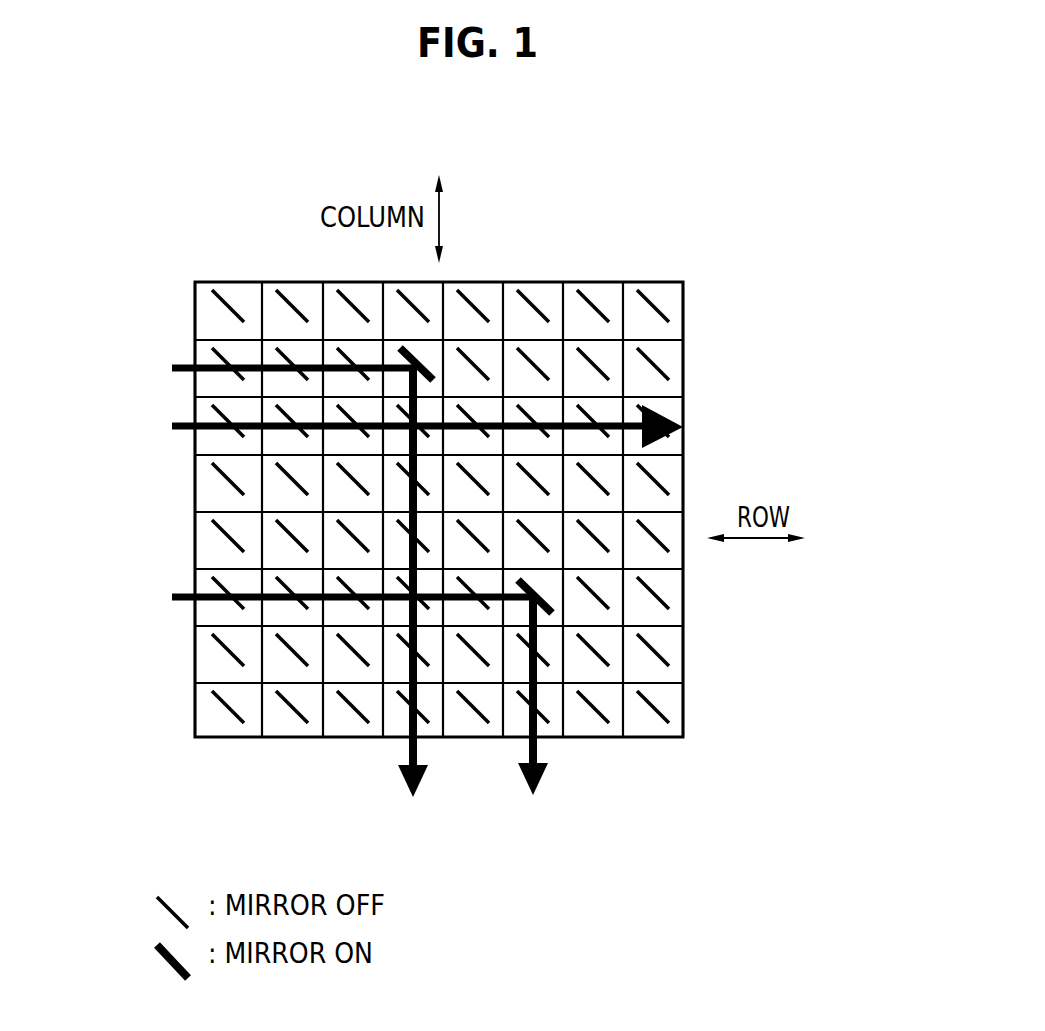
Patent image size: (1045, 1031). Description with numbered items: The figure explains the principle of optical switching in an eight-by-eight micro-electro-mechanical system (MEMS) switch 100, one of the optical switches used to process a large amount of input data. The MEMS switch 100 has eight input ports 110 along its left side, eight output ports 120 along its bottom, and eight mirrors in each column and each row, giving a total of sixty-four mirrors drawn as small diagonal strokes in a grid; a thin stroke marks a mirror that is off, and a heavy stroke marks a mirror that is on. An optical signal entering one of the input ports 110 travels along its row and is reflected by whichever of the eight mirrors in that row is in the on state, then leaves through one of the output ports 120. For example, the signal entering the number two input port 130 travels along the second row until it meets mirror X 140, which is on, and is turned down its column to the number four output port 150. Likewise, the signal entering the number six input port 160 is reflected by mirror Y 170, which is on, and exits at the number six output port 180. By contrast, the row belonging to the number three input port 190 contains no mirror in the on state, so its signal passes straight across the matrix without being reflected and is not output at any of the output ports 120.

The MEMS switch 100 is at (683, 308).
The input ports 110 is at (151, 265).
The output ports 120 is at (696, 818).
The number 2 input port 130 is at (140, 367).
The mirror X 140 is at (420, 362).
The number 4 output port 150 is at (423, 818).
The number 6 input port 160 is at (140, 597).
The mirror Y 170 is at (540, 594).
The number 6 output port 180 is at (545, 818).
The number 3 input port 190 is at (140, 425).